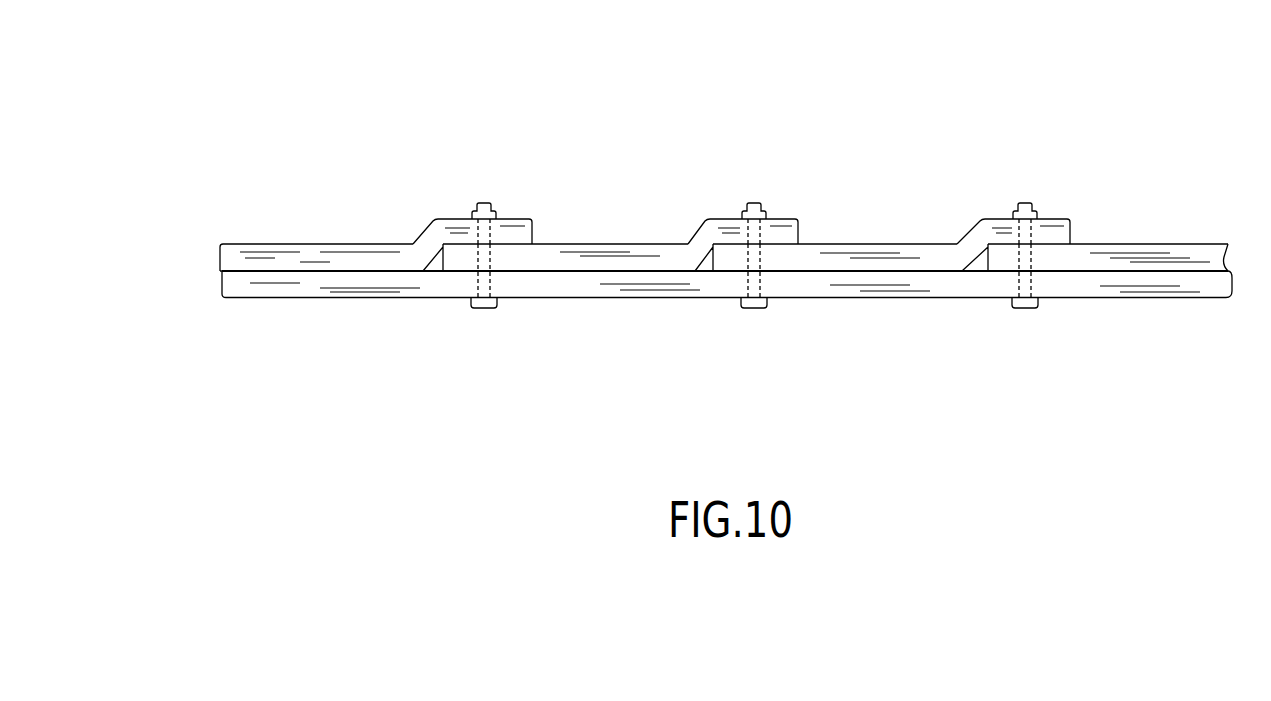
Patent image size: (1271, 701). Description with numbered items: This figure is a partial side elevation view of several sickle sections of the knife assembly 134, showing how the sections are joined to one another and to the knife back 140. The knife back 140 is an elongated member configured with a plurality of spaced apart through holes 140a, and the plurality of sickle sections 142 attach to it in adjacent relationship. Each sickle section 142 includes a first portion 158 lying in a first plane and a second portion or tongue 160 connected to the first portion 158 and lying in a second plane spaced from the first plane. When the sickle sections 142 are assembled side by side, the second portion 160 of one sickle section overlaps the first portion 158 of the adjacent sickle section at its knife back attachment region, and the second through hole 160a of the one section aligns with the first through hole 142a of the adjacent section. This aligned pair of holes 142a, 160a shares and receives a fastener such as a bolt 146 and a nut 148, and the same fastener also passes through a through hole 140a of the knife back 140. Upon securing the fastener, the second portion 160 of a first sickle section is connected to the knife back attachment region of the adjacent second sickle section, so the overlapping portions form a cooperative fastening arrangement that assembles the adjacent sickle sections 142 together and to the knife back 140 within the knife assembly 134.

The knife assembly 134 is at (570, 66).
The knife back 140 is at (302, 298).
The through hole 140a is at (497, 280).
The sickle section 142 is at (295, 230).
The first through hole 142a is at (477, 258).
The bolt 146 is at (482, 308).
The nut 148 is at (472, 210).
The first portion 158 is at (343, 272).
The second portion 160 is at (536, 220).
The second through hole 160a is at (490, 235).